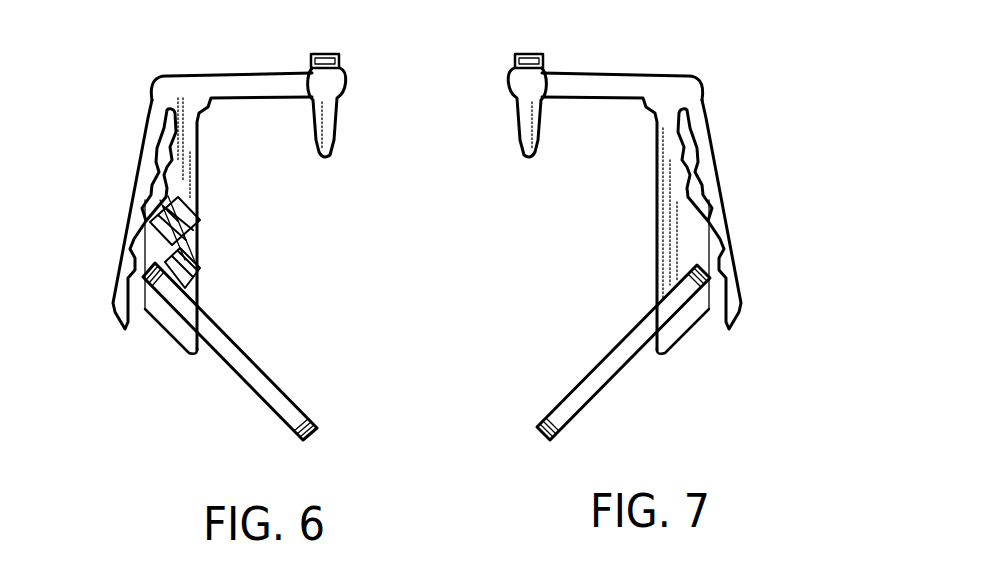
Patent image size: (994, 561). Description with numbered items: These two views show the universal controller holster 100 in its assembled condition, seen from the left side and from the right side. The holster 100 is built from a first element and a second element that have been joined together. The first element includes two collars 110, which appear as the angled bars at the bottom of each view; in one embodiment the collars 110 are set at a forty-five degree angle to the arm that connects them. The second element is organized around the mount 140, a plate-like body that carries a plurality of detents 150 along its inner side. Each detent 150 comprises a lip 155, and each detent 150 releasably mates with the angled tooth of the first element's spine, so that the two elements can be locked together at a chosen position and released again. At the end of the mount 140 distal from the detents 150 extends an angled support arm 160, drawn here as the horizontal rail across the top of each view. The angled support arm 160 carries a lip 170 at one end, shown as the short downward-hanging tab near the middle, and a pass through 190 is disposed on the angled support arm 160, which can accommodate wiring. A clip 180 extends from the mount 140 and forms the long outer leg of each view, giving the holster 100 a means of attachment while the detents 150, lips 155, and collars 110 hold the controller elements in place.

In FIG. 6, the universal controller holster 100 is at (148, 30).
In FIG. 7, the universal controller holster 100 is at (722, 41).
In FIG. 6, the collar 110 is at (270, 390).
In FIG. 7, the collar 110 is at (590, 378).
In FIG. 6, the mount 140 is at (197, 277).
In FIG. 7, the mount 140 is at (668, 260).
In FIG. 6, the detent 150 is at (197, 275).
In FIG. 6, the lip 155 is at (172, 200).
In FIG. 6, the angled support arm 160 is at (254, 85).
In FIG. 7, the angled support arm 160 is at (620, 90).
In FIG. 6, the lip 170 is at (338, 136).
In FIG. 7, the lip 170 is at (520, 140).
In FIG. 6, the clip 180 is at (128, 203).
In FIG. 7, the clip 180 is at (730, 213).
In FIG. 6, the pass through 190 is at (337, 55).
In FIG. 7, the pass through 190 is at (517, 55).